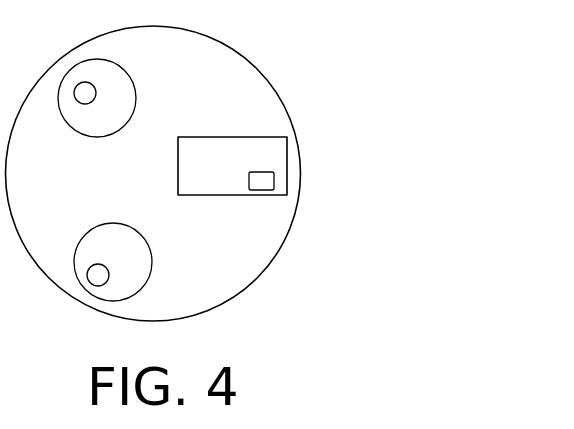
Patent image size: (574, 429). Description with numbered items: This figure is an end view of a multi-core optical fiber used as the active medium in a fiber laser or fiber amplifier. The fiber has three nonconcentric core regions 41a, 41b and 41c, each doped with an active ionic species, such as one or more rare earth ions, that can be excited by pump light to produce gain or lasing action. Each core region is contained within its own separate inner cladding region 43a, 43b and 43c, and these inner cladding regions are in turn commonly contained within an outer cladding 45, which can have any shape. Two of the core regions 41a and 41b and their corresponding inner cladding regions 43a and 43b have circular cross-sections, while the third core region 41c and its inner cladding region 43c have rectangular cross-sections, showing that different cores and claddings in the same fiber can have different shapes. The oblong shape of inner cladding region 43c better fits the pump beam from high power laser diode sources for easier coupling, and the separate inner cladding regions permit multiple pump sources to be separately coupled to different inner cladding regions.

The outer cladding 45 is at (218, 55).
The inner cladding region 43a is at (97, 59).
The core region 41a is at (82, 91).
The inner cladding region 43b is at (123, 292).
The core region 41b is at (90, 275).
The inner cladding region 43c is at (245, 140).
The core region 41c is at (265, 187).